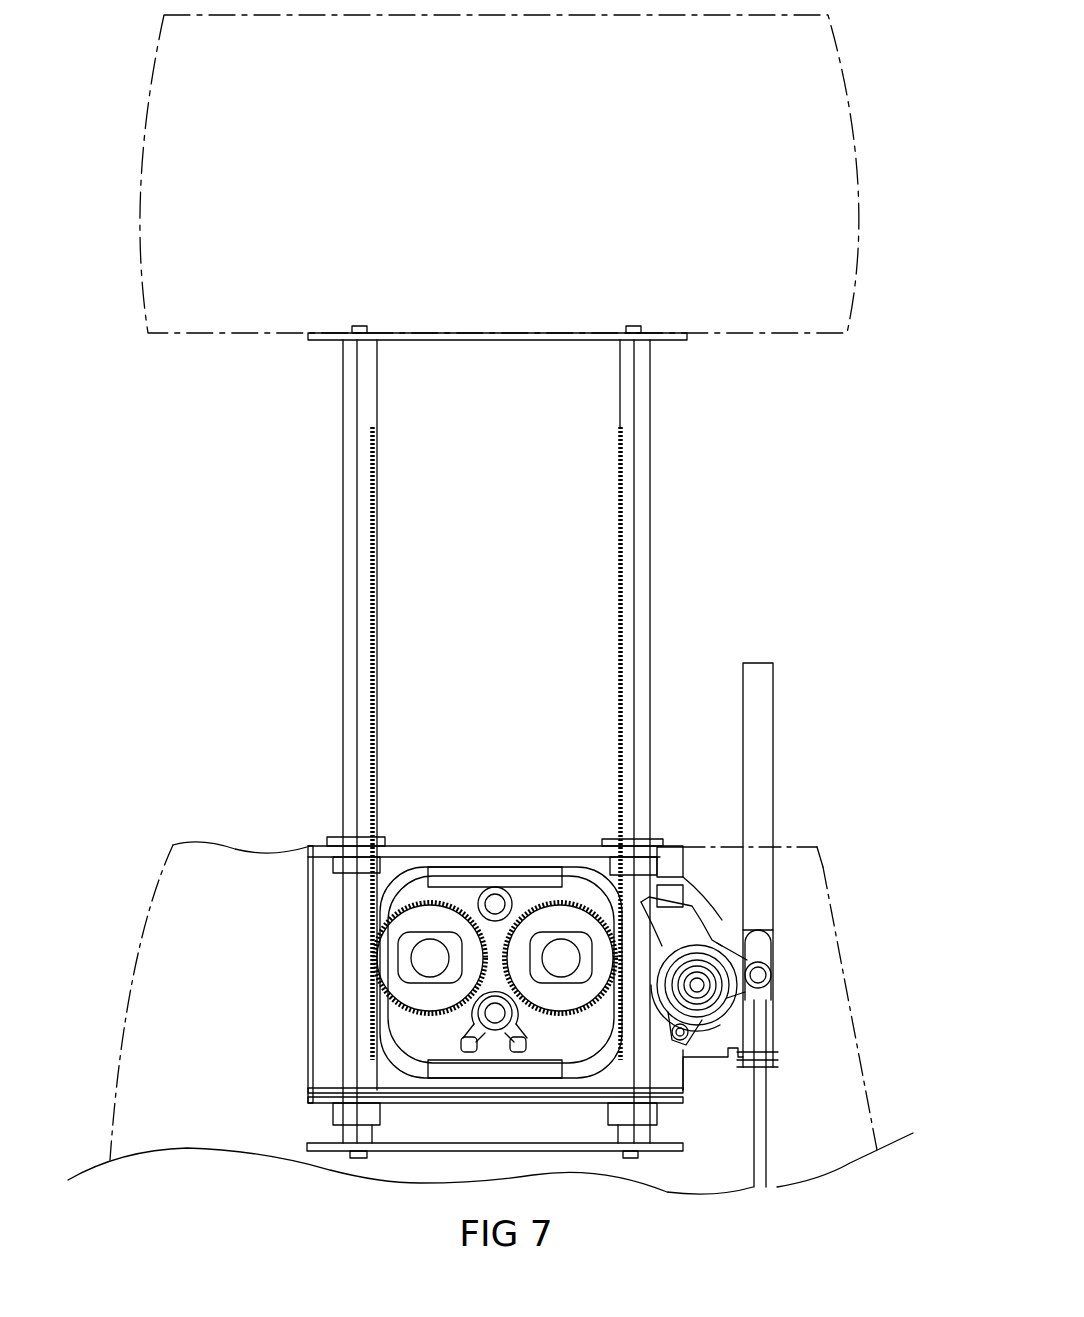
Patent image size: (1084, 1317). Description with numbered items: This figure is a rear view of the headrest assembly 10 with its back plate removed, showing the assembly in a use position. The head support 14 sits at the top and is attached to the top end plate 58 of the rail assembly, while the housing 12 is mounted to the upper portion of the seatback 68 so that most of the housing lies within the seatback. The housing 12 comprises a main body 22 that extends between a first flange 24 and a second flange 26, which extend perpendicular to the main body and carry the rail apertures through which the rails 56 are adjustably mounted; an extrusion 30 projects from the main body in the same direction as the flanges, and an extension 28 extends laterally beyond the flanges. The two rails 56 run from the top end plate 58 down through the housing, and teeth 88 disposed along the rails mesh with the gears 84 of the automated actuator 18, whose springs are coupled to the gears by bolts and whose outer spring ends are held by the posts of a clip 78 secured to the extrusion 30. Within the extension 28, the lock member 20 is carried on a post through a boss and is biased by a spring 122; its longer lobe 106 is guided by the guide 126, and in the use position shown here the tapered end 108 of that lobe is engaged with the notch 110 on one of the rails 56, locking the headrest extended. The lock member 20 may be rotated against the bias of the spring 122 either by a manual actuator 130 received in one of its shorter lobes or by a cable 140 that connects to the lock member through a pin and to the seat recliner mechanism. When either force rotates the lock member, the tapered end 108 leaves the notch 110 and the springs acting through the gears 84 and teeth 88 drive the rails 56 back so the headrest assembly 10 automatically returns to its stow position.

The headrest assembly 10 is at (187, 657).
The housing 12 is at (307, 1030).
The head support 14 is at (820, 192).
The automated actuator 18 is at (410, 893).
The lock member 20 is at (710, 923).
The main body 22 is at (318, 958).
The first flange 24 is at (462, 847).
The second flange 26 is at (473, 1100).
The extension 28 is at (733, 1032).
The extrusion 30 is at (605, 1017).
The rails 56 is at (347, 590).
The top end plate 58 is at (526, 333).
The seatback 68 is at (833, 962).
The clip 78 is at (513, 1028).
The gears 84 is at (428, 1003).
The teeth 88 is at (373, 605).
The longer lobe 106 is at (660, 925).
The tapered end 108 is at (645, 907).
The notch 110 is at (706, 928).
The spring 122 is at (727, 1000).
The guide 126 is at (682, 893).
The manual actuator 130 is at (763, 726).
The cable 140 is at (763, 1107).